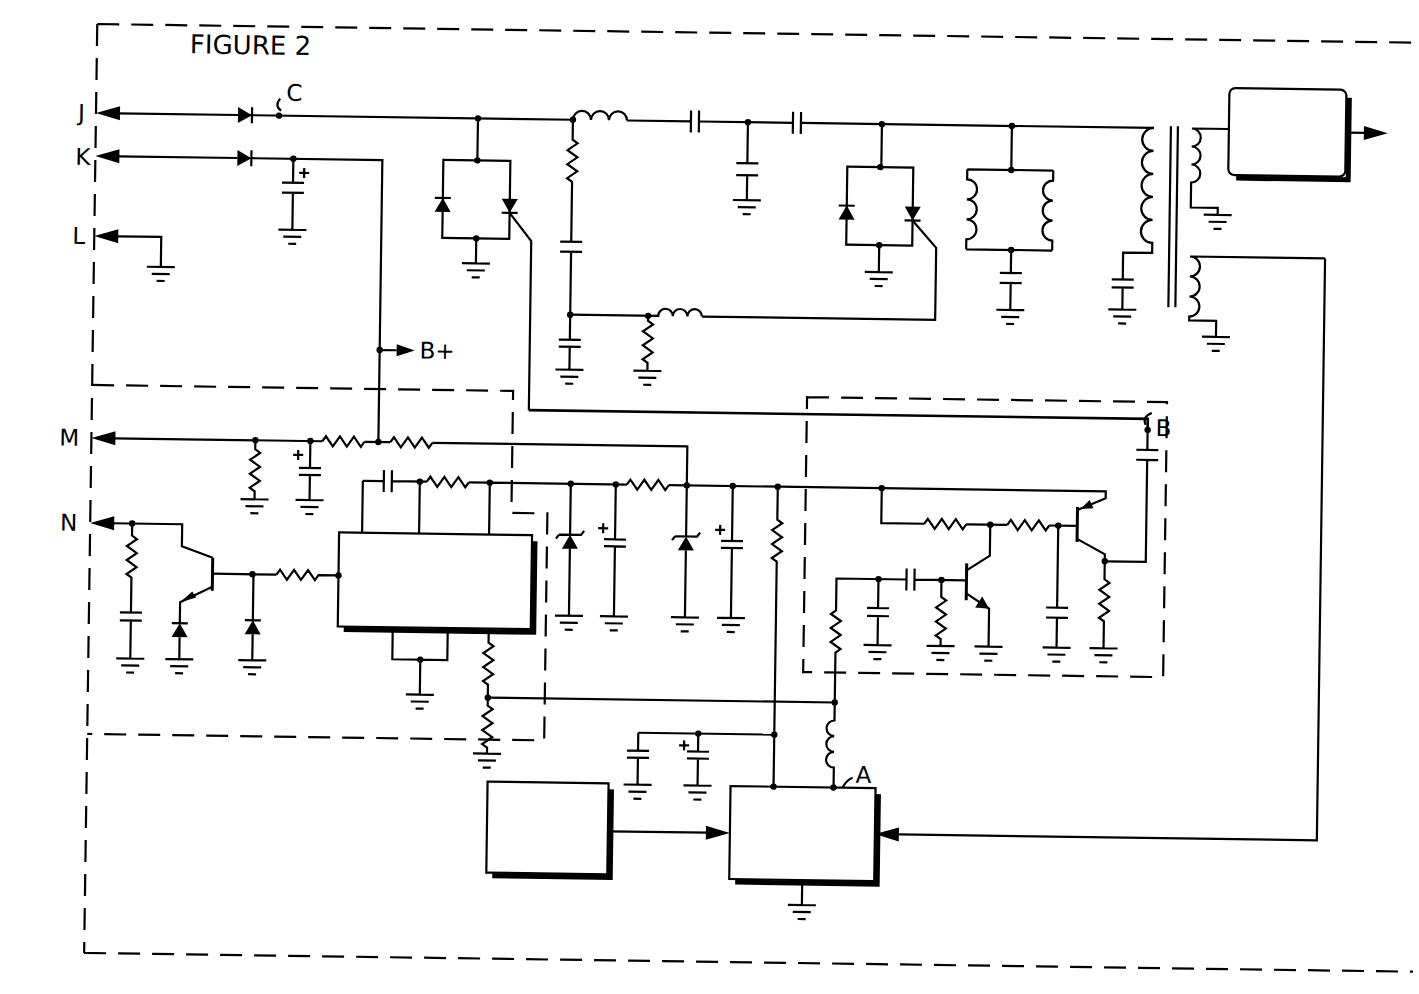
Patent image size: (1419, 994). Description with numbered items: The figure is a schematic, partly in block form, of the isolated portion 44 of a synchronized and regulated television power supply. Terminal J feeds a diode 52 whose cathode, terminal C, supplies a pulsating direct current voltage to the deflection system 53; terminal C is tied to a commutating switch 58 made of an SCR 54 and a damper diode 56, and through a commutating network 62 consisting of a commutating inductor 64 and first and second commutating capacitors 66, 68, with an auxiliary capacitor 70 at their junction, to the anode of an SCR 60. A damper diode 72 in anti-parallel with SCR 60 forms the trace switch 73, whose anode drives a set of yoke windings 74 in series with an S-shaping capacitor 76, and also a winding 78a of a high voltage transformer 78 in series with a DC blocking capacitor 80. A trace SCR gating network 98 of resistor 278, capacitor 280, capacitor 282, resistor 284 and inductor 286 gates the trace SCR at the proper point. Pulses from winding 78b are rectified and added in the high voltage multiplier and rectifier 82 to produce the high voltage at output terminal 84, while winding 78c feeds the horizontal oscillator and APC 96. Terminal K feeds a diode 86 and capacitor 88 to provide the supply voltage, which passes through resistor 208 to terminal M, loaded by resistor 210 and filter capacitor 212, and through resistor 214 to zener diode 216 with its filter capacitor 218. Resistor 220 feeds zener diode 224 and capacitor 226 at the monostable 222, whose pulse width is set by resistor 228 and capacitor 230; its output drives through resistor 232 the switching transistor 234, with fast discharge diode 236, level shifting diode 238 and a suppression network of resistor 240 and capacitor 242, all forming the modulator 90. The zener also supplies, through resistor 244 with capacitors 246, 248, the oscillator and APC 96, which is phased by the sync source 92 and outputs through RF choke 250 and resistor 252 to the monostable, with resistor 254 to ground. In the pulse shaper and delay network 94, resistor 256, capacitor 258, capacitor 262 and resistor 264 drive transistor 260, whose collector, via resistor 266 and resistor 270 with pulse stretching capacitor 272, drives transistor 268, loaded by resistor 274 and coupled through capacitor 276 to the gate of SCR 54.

The diode 52 is at (233, 120).
The diode 86 is at (247, 168).
The capacitor 88 is at (307, 192).
The commutating switch 58 is at (487, 216).
The damper diode 56 is at (430, 202).
The SCR 54 is at (519, 202).
The commutating inductor 64 is at (617, 96).
The resistor 278 is at (580, 157).
The capacitor 280 is at (580, 242).
The capacitor 282 is at (580, 342).
The resistor 284 is at (658, 342).
The inductor 286 is at (672, 302).
The trace SCR gating network 98 is at (741, 366).
The first commutating capacitor 66 is at (700, 125).
The commutating network 62 is at (782, 99).
The second commutating capacitor 68 is at (804, 126).
The auxiliary capacitor 70 is at (738, 158).
The trace switch 73 is at (891, 222).
The damper diode 72 is at (838, 207).
The SCR 60 is at (923, 203).
The deflection system 53 is at (780, 263).
The set of yoke windings 74 is at (1014, 210).
The S-shaping capacitor 76 is at (997, 267).
The high voltage transformer 78 is at (1176, 105).
The winding 78a is at (1148, 168).
The DC blocking capacitor 80 is at (1116, 270).
The winding 78b is at (1212, 171).
The high voltage multiplier and rectifier 82 is at (1271, 72).
The output terminal 84 is at (1358, 122).
The winding 78c is at (1196, 271).
The resistor 208 is at (348, 433).
The resistor 214 is at (423, 433).
The resistor 210 is at (256, 474).
The filter capacitor 212 is at (317, 476).
The capacitor 230 is at (394, 475).
The resistor 228 is at (440, 472).
The resistor 220 is at (636, 472).
The modulator 90 is at (352, 694).
The resistor 252 is at (507, 663).
The resistor 254 is at (511, 713).
The resistor 240 is at (110, 568).
The capacitor 242 is at (160, 628).
The switching transistor 234 is at (207, 582).
The resistor 232 is at (312, 560).
The level shifting diode 238 is at (196, 628).
The fast discharge diode 236 is at (268, 628).
The monostable 222 is at (344, 596).
The zener diode 224 is at (586, 548).
The capacitor 226 is at (630, 534).
The zener diode 216 is at (682, 556).
The filter capacitor 218 is at (726, 552).
The resistor 244 is at (787, 530).
The high frequency bypass capacitor 246 is at (621, 756).
The low frequency filter capacitor 248 is at (710, 746).
The RF choke 250 is at (845, 748).
The horizontal oscillator and automatic phase control network 96 is at (885, 868).
The sync source 92 is at (496, 814).
The isolated portion 44 is at (311, 838).
The pulse shaper and delay network 94 is at (986, 466).
The resistor 256 is at (840, 616).
The capacitor 258 is at (920, 554).
The capacitor 262 is at (899, 610).
The resistor 264 is at (950, 612).
The transistor 260 is at (1020, 580).
The resistor 266 is at (954, 510).
The resistor 270 is at (1044, 510).
The capacitor 272 is at (1054, 610).
The transistor 268 is at (1138, 524).
The resistor 274 is at (1122, 590).
The capacitor 276 is at (1162, 442).